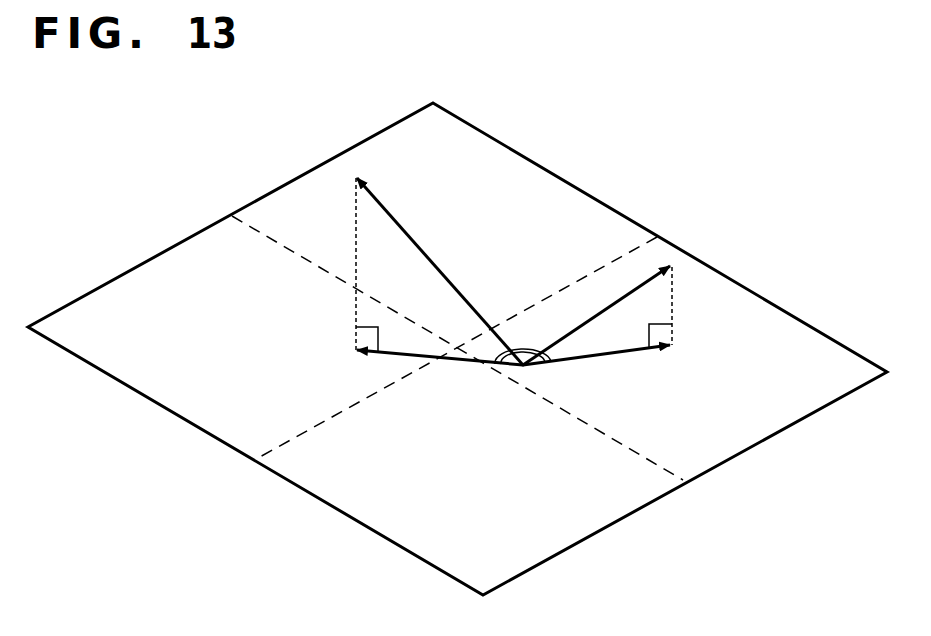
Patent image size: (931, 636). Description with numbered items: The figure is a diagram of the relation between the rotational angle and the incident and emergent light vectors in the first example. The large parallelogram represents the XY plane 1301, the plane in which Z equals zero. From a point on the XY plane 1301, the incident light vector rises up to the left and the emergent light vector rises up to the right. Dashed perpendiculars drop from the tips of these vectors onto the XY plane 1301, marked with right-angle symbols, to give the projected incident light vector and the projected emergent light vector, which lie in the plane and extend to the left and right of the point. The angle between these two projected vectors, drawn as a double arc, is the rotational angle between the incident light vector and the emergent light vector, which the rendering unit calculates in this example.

The XY plane 1301 is at (582, 160).